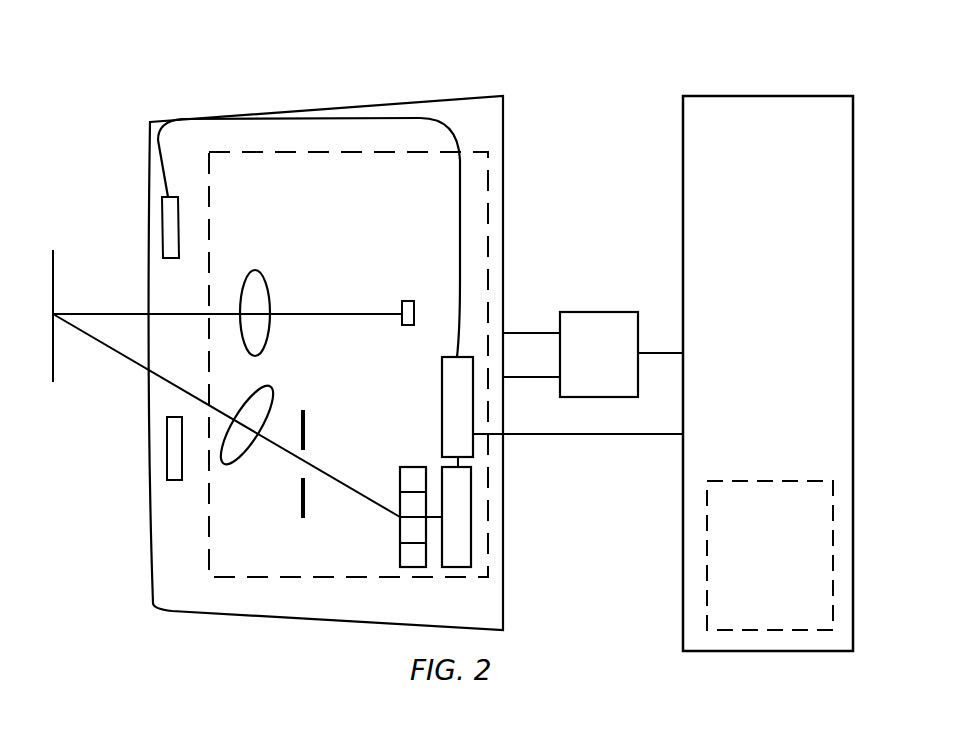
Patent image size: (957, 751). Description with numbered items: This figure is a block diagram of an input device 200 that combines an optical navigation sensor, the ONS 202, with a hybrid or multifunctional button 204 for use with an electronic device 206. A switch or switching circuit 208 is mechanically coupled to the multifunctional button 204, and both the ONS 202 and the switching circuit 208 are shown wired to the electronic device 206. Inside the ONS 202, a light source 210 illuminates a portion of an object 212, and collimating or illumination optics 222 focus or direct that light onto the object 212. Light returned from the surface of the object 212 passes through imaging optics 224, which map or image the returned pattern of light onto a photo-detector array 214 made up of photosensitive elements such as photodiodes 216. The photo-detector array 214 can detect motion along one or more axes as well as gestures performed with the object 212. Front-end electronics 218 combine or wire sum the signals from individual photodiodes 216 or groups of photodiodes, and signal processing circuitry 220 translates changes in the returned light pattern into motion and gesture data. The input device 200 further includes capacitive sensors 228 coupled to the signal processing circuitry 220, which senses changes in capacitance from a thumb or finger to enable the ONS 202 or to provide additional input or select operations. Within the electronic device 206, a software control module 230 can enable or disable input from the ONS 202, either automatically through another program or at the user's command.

The input device 200 is at (594, 128).
The ONS 202 is at (257, 181).
The multifunctional button 204 is at (503, 192).
The electronic device 206 is at (783, 133).
The switching circuit 208 is at (598, 314).
The light source 210 is at (402, 306).
The object 212 is at (53, 362).
The photo-detector array 214 is at (392, 478).
The photodiodes 216 is at (400, 530).
The front-end electronics 218 is at (471, 548).
The signal processing circuitry 220 is at (442, 386).
The illumination optics 222 is at (262, 272).
The imaging optics 224 is at (232, 455).
The capacitive sensors 228 is at (172, 262).
The software control module 230 is at (753, 616).